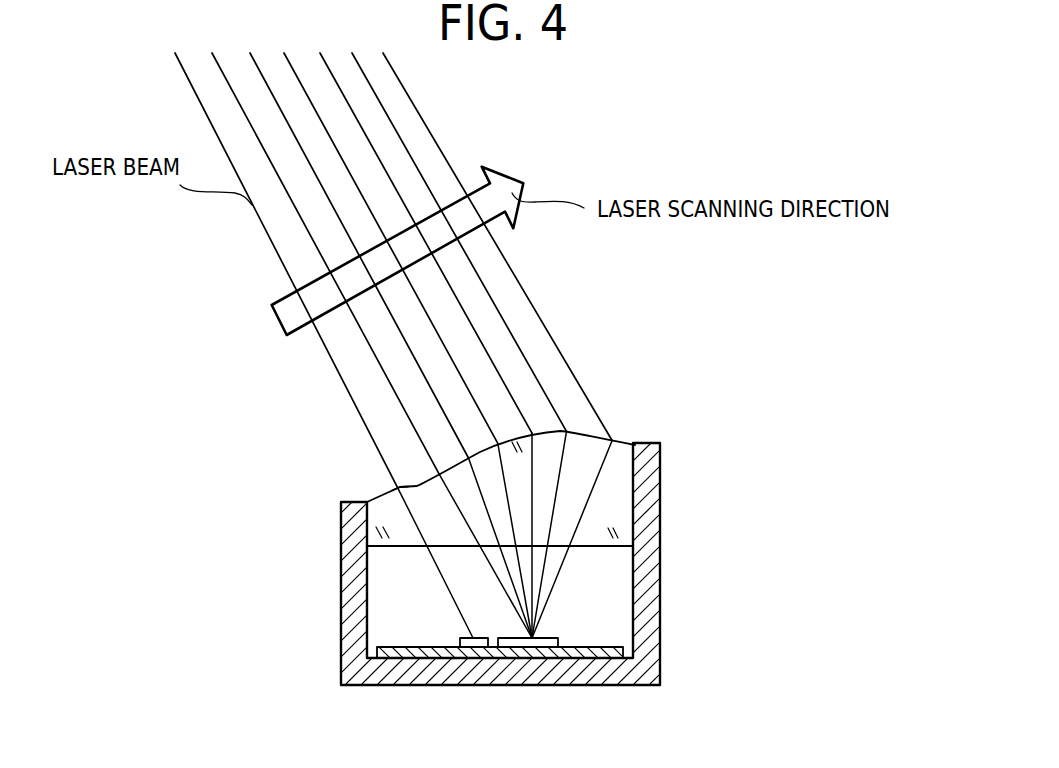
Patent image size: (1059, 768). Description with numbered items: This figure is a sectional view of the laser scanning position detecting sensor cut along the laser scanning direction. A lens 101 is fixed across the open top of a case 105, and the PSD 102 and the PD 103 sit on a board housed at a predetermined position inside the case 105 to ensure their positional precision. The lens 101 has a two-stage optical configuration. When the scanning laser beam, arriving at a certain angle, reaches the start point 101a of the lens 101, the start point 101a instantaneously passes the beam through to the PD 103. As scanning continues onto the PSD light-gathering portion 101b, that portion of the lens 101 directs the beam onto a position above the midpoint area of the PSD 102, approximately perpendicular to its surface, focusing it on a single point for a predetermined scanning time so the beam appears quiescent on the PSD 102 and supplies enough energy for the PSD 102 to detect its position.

The lens 101 is at (537, 417).
The start point 101a is at (280, 445).
The PSD light-gathering portion 101b is at (548, 432).
The PSD 102 is at (548, 637).
The PD 103 is at (463, 636).
The case 105 is at (660, 657).